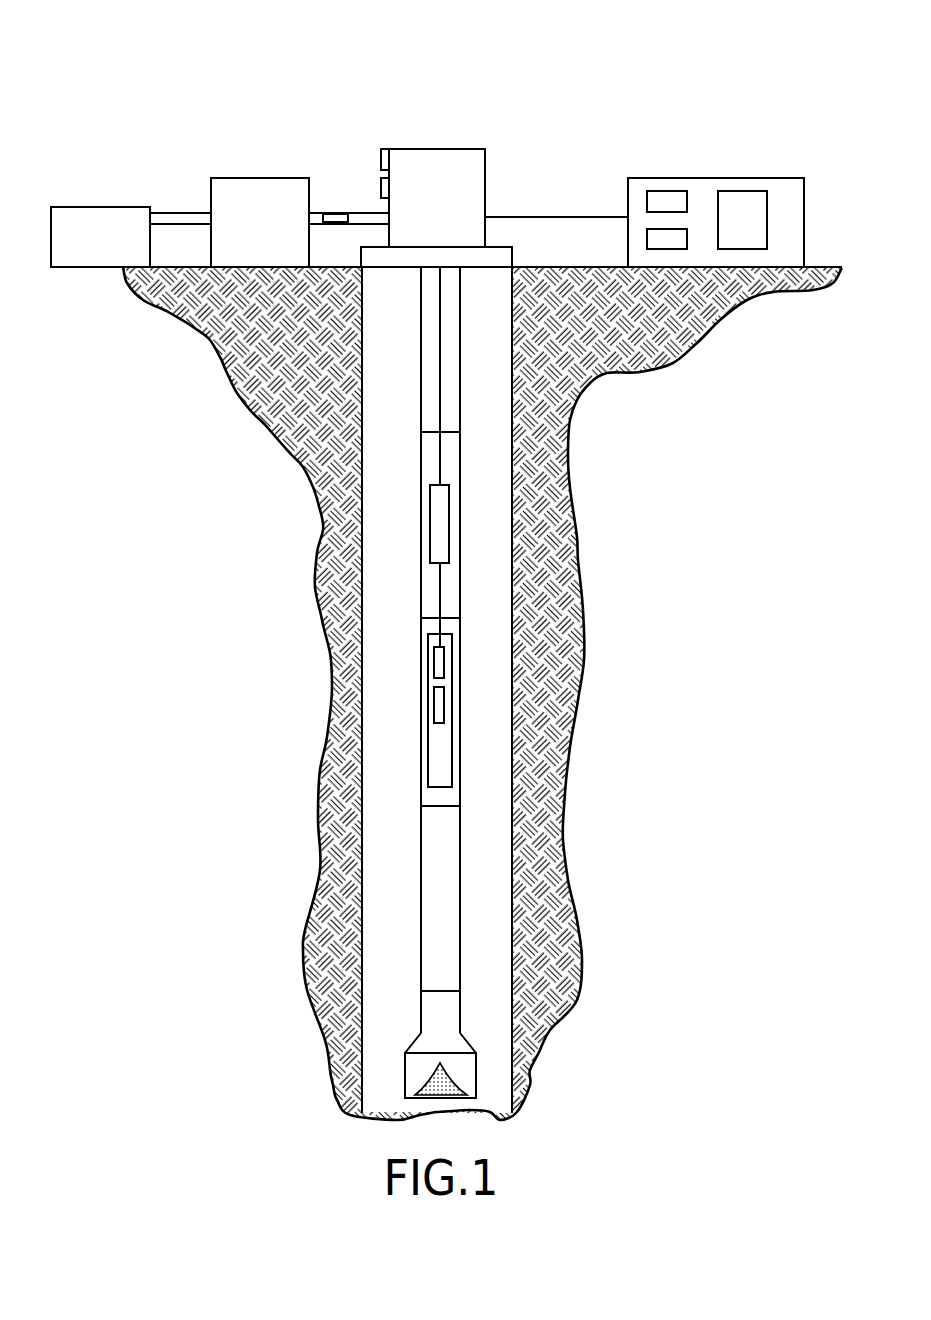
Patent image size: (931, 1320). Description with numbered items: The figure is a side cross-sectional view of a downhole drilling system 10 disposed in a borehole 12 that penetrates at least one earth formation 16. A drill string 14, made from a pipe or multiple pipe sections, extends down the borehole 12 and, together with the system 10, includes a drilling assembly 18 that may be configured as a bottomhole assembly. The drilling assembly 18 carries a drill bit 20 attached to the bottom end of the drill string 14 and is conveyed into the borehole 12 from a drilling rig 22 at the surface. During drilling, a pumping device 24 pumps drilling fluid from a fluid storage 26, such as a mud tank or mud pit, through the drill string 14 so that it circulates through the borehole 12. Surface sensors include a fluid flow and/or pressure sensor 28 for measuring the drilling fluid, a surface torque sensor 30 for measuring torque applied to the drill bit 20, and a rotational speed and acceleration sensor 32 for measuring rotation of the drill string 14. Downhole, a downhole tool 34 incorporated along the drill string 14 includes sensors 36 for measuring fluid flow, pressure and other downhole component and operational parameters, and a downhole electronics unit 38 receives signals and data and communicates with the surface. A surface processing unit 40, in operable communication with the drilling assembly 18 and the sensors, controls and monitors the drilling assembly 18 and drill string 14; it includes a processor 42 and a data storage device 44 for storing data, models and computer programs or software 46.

The downhole drilling system 10 is at (87, 61).
The borehole 12 is at (493, 587).
The drill string 14 is at (422, 615).
The earth formation 16 is at (277, 387).
The drilling assembly 18 is at (490, 991).
The drill bit 20 is at (425, 1078).
The drilling rig 22 is at (437, 163).
The pumping device 24 is at (257, 193).
The fluid storage 26 is at (103, 217).
The fluid flow and/or pressure sensor 28 is at (337, 217).
The surface torque sensor 30 is at (380, 190).
The rotational speed and acceleration sensor 32 is at (380, 160).
The downhole tool 34 is at (428, 748).
The sensors 36 is at (438, 662).
The downhole electronics unit 38 is at (438, 518).
The surface processing unit 40 is at (773, 178).
The processor 42 is at (738, 193).
The data storage device 44 is at (665, 198).
The computer programs or software 46 is at (653, 230).